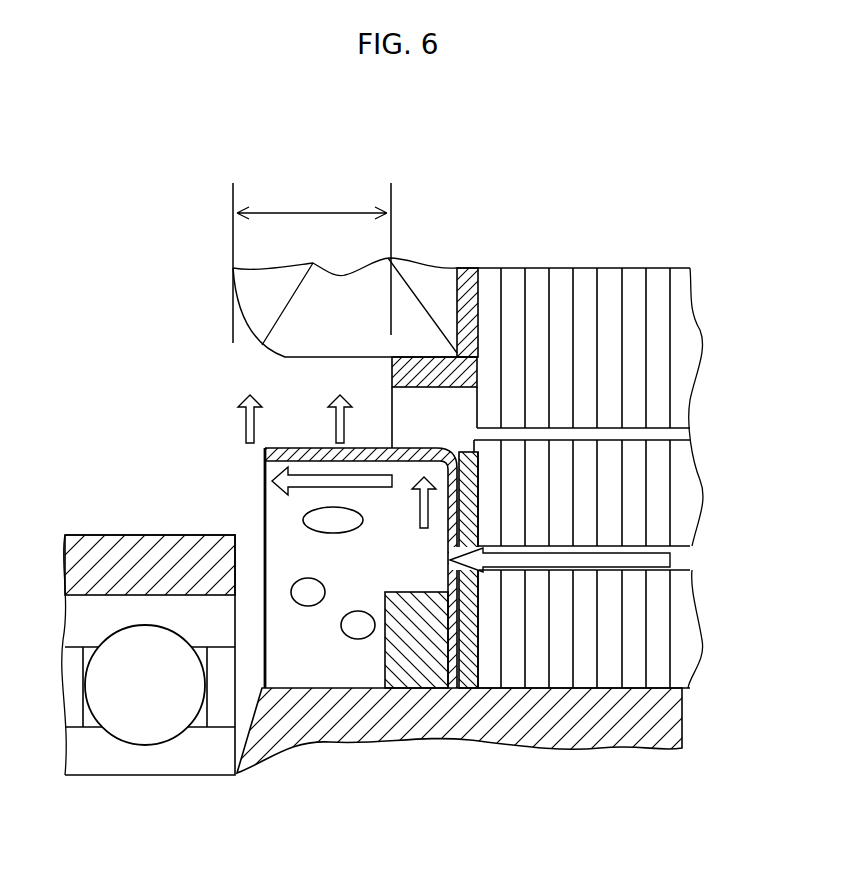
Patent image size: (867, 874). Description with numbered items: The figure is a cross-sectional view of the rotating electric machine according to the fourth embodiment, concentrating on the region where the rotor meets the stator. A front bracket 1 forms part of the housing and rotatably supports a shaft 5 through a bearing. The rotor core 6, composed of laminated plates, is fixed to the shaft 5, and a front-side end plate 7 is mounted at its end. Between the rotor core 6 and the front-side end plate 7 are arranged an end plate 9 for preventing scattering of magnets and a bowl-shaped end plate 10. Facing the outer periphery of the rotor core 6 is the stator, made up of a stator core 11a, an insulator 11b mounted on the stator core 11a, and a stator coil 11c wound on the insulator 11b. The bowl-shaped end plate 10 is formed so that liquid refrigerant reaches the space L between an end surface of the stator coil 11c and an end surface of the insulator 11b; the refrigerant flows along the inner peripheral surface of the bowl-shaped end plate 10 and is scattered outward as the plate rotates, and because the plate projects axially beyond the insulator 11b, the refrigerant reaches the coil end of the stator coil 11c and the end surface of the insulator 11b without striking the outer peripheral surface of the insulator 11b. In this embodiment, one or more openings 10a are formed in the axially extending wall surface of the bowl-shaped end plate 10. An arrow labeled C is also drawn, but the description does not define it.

The front bracket 1 is at (100, 535).
The shaft 5 is at (410, 725).
The rotor core 6 is at (627, 663).
The front-side end plate 7 is at (383, 652).
The end plate for preventing scattering of magnets 9 is at (467, 622).
The bowl-shaped end plate 10 is at (292, 445).
The openings 10a is at (337, 450).
The stator core 11a is at (575, 284).
The insulator 11b is at (468, 300).
The stator coil 11c is at (427, 286).
The cooling air flow C is at (672, 560).
The space L is at (312, 262).